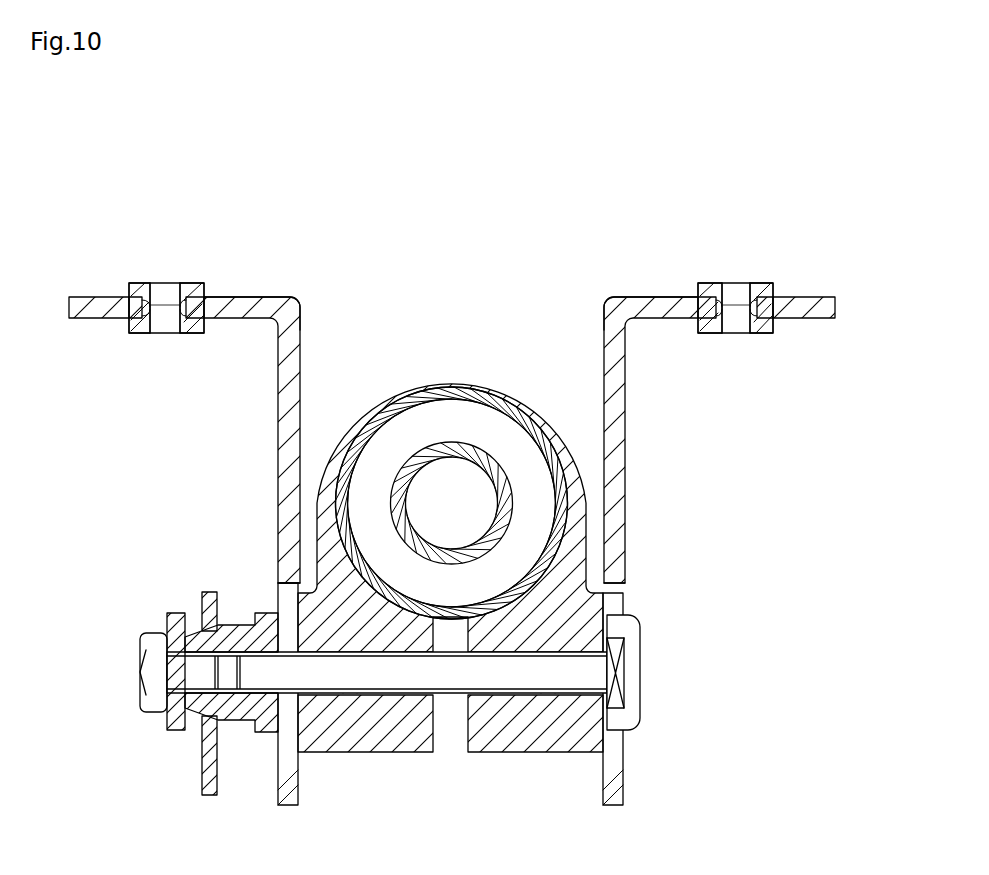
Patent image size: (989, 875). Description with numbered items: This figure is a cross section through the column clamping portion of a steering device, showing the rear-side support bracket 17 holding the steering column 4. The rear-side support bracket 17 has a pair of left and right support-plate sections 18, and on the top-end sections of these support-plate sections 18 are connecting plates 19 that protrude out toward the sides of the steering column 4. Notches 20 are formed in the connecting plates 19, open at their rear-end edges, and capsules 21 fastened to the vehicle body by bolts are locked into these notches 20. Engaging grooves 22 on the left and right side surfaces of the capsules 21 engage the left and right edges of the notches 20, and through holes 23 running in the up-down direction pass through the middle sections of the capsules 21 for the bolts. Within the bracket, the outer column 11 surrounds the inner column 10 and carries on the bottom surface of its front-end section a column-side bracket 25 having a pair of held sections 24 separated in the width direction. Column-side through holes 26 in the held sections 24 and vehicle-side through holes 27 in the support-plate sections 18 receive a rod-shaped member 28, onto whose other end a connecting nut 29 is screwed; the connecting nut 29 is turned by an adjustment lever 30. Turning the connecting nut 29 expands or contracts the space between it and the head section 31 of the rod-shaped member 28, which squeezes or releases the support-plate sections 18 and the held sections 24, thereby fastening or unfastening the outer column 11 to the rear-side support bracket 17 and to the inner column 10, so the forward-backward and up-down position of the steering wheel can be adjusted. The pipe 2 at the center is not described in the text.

The pipe 2 is at (405, 478).
The steering column 4 is at (535, 389).
The inner column 10 is at (394, 410).
The outer column 11 is at (479, 377).
The rear-side support bracket 17 is at (823, 298).
The support-plate sections 18 is at (287, 412).
The connecting plates 19 is at (259, 299).
The notches 20 is at (178, 297).
The capsules 21 is at (139, 290).
The engaging grooves 22 is at (179, 300).
The through holes 23 is at (160, 285).
The held sections 24 is at (410, 740).
The column-side bracket 25 is at (373, 754).
The column-side through holes 26 is at (350, 697).
The vehicle-side through holes 27 is at (277, 597).
The rod-shaped member 28 is at (589, 668).
The connecting nut 29 is at (245, 712).
The adjustment lever 30 is at (202, 782).
The head section 31 is at (631, 710).